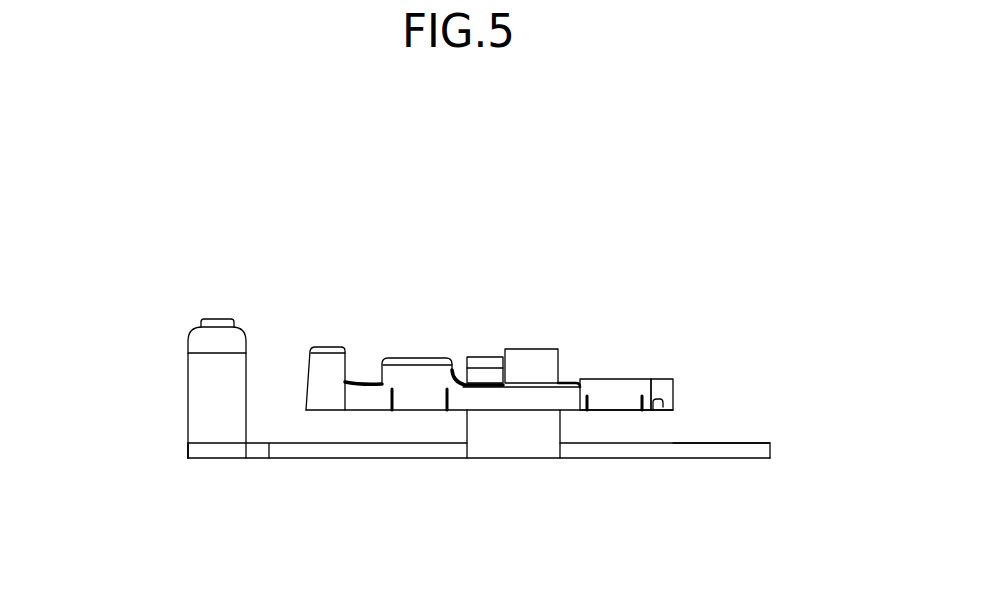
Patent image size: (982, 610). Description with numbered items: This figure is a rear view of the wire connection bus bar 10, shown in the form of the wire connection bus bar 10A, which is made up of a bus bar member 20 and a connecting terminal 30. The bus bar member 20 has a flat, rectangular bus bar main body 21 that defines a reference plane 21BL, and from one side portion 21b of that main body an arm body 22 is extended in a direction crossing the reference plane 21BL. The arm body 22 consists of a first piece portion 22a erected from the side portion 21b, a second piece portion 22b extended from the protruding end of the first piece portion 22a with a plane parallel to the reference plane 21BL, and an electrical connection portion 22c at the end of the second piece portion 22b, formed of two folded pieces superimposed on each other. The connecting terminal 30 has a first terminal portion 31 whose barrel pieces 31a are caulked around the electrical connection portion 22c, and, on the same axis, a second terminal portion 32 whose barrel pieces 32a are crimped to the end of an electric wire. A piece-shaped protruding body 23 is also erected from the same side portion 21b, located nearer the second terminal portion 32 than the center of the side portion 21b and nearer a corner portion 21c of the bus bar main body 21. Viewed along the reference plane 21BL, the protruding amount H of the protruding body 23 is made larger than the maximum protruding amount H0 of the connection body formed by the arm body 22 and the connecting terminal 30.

The wire connection bus bar 10A is at (780, 270).
The wire connection bus bar 10 is at (471, 313).
The bus bar member 20 is at (681, 428).
The bus bar main body 21 is at (770, 452).
The side portion 21b is at (385, 458).
The corner portion 21c is at (188, 452).
The reference plane 21BL is at (733, 443).
The arm body 22 is at (542, 125).
The first piece portion 22a is at (456, 382).
The second piece portion 22b is at (490, 357).
The electrical connection portion 22c is at (573, 383).
The protruding body 23 is at (216, 319).
The connecting terminal 30 is at (641, 363).
The first terminal portion 31 is at (578, 337).
The barrel piece 31a is at (612, 379).
The second terminal portion 32 is at (365, 319).
The barrel piece 32a is at (418, 357).
The protruding amount H is at (201, 319).
The maximum protruding amount H0 is at (310, 343).